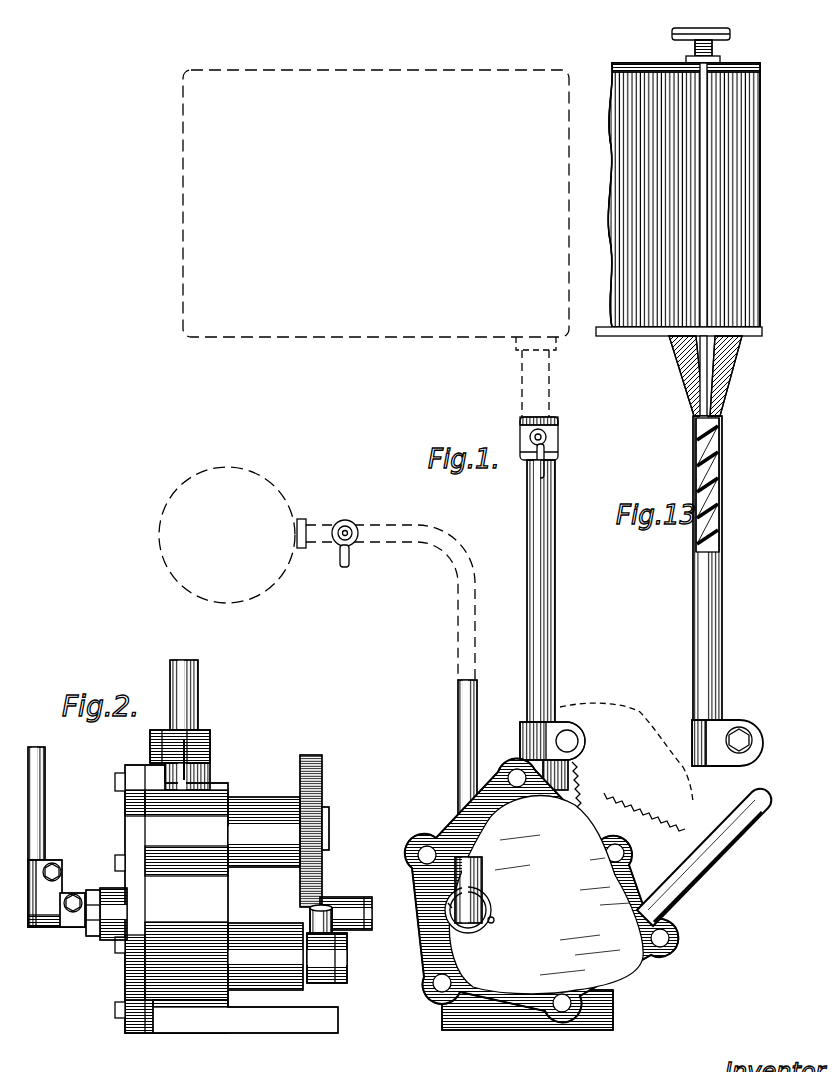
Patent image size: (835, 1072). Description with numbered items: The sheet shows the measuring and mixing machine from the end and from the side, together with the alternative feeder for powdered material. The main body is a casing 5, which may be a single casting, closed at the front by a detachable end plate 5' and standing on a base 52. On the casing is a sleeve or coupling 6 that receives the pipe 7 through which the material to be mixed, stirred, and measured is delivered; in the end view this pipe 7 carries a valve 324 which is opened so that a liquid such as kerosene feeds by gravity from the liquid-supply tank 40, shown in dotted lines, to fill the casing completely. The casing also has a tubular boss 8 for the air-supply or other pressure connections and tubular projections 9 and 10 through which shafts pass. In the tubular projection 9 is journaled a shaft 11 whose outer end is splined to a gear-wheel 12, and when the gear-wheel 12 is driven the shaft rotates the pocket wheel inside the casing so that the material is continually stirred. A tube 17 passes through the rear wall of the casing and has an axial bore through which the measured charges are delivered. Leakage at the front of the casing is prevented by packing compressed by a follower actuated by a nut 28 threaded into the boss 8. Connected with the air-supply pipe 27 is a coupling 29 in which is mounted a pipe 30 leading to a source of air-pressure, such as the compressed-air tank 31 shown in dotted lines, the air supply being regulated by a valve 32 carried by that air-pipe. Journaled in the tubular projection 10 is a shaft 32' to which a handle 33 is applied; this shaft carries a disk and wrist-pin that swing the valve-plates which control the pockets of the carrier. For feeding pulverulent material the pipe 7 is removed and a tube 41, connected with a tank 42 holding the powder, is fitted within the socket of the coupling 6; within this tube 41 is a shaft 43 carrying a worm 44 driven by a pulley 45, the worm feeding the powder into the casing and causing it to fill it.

In FIG. 2, the casing 5 is at (176, 899).
In FIG. 1, the casing 5 is at (545, 894).
In FIG. 2, the detachable end plate 5' is at (118, 899).
In FIG. 1, the detachable end plate 5' is at (546, 895).
In FIG. 2, the base 52 is at (245, 1016).
In FIG. 1, the base 52 is at (527, 1021).
In FIG. 2, the sleeve or coupling 6 is at (211, 772).
In FIG. 1, the sleeve or coupling 6 is at (519, 745).
In FIG. 13, the sleeve or coupling 6 is at (692, 747).
In FIG. 2, the pipe 7 is at (199, 702).
In FIG. 1, the pipe 7 is at (557, 671).
In FIG. 2, the tubular boss 8 is at (103, 892).
In FIG. 1, the tubular boss 8 is at (492, 922).
In FIG. 2, the tubular projection 9 is at (265, 798).
In FIG. 2, the tubular projection 10 is at (238, 950).
In FIG. 2, the shaft 11 is at (330, 828).
In FIG. 2, the gear-wheel 12 is at (312, 755).
In FIG. 1, the gear-wheel 12 is at (620, 832).
In FIG. 2, the tube 17 is at (344, 898).
In FIG. 2, the air-supply pipe 27 is at (77, 930).
In FIG. 2, the nut 28 is at (94, 938).
In FIG. 1, the nut 28 is at (474, 928).
In FIG. 2, the coupling 29 is at (44, 928).
In FIG. 1, the coupling 29 is at (457, 916).
In FIG. 2, the pipe 30 is at (46, 806).
In FIG. 1, the pipe 30 is at (458, 765).
In FIG. 1, the compressed-air tank 31 is at (232, 535).
In FIG. 1, the valve 32 is at (358, 547).
In FIG. 2, the shaft 32' is at (347, 958).
In FIG. 1, the valve 324 is at (563, 447).
In FIG. 2, the handle 33 is at (314, 915).
In FIG. 1, the handle 33 is at (725, 848).
In FIG. 1, the liquid-supply tank 40 is at (376, 243).
In FIG. 13, the tube 41 is at (722, 629).
In FIG. 13, the tank 42 is at (762, 238).
In FIG. 13, the shaft 43 is at (702, 393).
In FIG. 13, the worm 44 is at (722, 457).
In FIG. 13, the pulley 45 is at (731, 35).